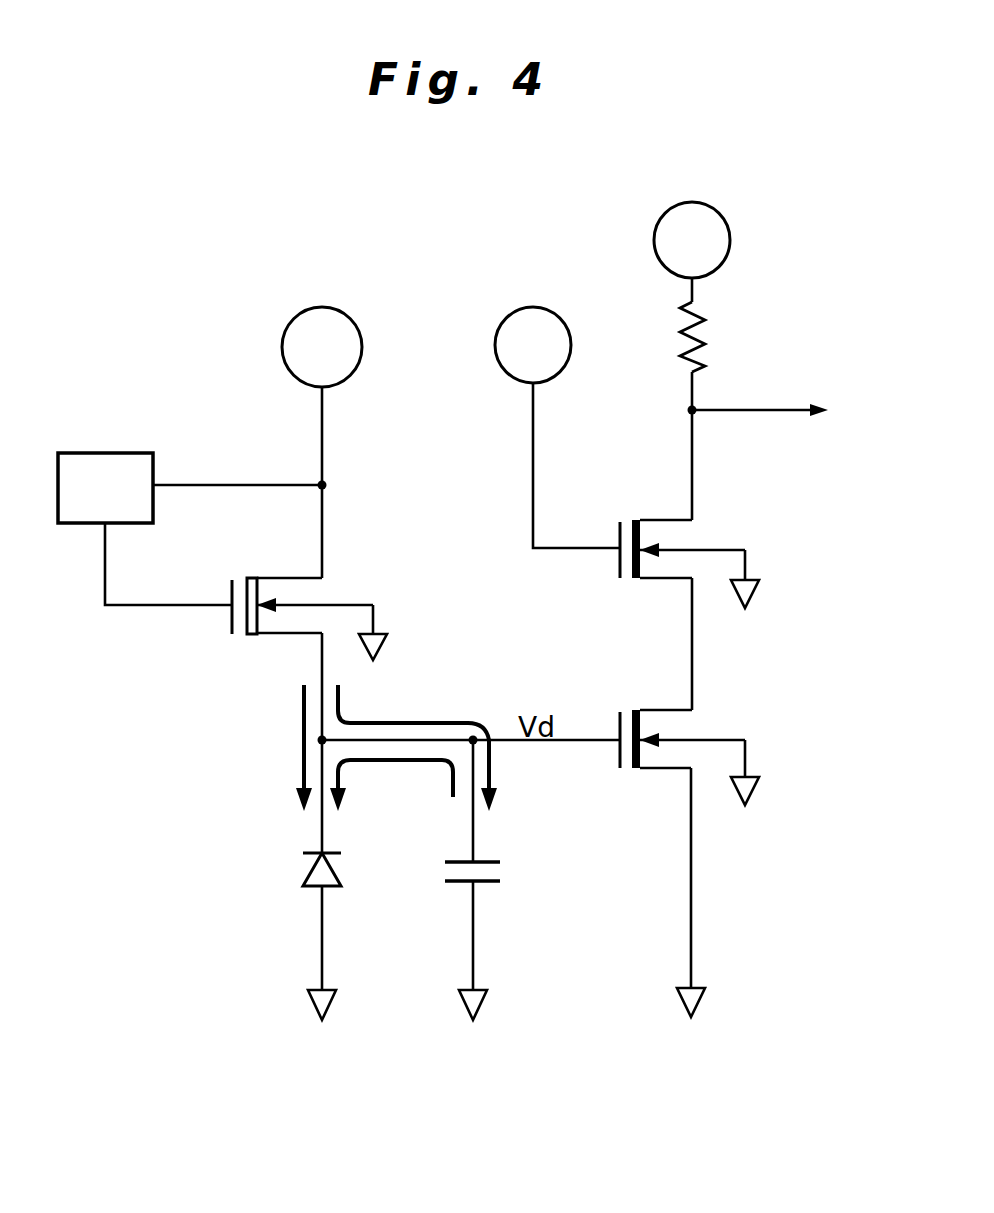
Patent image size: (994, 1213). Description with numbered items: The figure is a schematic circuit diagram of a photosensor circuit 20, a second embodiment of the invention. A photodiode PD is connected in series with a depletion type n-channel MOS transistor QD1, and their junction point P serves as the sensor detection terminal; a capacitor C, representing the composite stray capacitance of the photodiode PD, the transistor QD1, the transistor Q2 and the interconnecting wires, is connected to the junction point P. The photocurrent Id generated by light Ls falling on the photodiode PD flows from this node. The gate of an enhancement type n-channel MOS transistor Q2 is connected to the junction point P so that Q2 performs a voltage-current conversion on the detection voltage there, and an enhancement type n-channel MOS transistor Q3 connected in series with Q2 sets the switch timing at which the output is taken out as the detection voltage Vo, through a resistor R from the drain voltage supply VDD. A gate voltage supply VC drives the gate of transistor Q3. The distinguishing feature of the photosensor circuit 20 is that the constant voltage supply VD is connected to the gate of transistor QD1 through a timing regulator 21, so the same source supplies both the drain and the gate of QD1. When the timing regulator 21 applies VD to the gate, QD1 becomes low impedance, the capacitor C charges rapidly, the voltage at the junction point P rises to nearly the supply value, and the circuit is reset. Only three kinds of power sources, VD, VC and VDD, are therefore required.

The photosensor circuit 20 is at (520, 250).
The timing regulator 21 is at (79, 511).
The depletion type n-channel MOS transistor QD1 is at (249, 578).
The enhancement type n-channel MOS transistor Q2 is at (636, 710).
The enhancement type n-channel MOS transistor Q3 is at (636, 520).
The photodiode PD is at (301, 955).
The capacitor C is at (483, 898).
The resistor R is at (704, 337).
The light signal Ls is at (295, 916).
The junction point P is at (476, 737).
The photocurrent Id is at (382, 748).
The constant voltage supply VD is at (322, 442).
The gate voltage supply VC is at (557, 427).
The drain voltage supply VDD is at (692, 252).
The detection voltage Vo is at (778, 412).